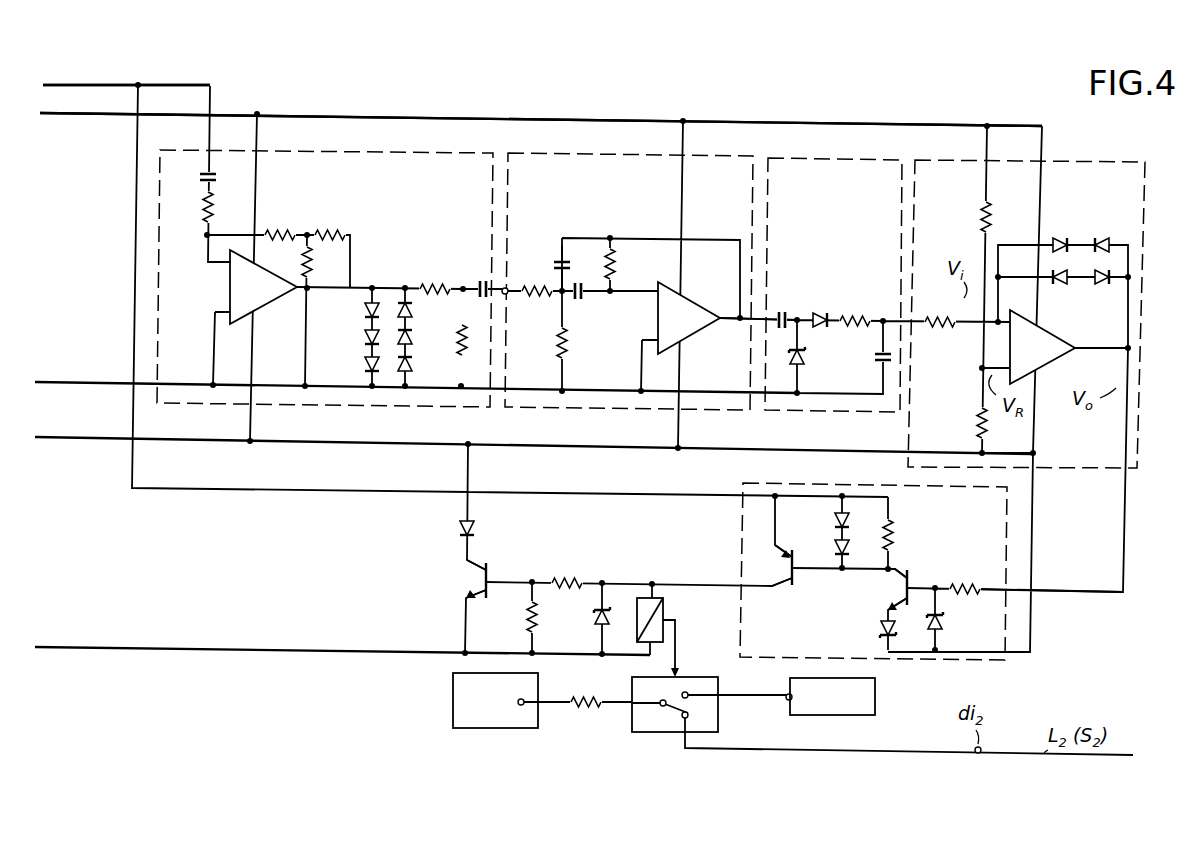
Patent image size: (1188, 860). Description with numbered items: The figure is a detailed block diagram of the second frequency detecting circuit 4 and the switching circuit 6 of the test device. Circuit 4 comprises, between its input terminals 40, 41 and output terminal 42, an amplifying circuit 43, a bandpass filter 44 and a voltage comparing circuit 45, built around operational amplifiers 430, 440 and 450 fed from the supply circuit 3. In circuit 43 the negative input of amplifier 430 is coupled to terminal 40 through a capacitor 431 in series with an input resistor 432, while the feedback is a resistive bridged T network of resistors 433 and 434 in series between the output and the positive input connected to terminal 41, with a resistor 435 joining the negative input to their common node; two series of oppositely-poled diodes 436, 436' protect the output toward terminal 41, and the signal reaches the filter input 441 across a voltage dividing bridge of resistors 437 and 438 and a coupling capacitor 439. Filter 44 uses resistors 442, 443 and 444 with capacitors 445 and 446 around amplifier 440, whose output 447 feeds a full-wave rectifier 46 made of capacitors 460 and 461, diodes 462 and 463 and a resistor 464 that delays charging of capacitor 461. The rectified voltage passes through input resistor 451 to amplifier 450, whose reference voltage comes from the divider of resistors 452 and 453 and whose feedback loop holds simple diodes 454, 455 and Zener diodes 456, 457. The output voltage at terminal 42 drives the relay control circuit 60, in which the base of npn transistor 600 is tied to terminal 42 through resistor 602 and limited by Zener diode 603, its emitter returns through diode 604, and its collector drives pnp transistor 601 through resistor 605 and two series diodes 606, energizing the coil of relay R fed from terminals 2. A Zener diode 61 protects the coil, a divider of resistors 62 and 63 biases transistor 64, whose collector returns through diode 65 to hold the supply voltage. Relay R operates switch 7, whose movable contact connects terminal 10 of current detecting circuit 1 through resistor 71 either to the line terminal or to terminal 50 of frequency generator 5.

The terminal of rectified supply 2 is at (68, 74).
The input terminal 40 is at (126, 73).
The supply circuit 3 is at (80, 116).
The second frequency detecting circuit 4 is at (684, 103).
The input terminal 41 is at (82, 384).
The output terminal 42 is at (1122, 516).
The amplifying circuit 43 is at (396, 151).
The bandpass filter 44 is at (576, 154).
The voltage comparing circuit 45 is at (1130, 162).
The full-wave rectifier 46 is at (856, 157).
The relay control circuit 60 is at (746, 485).
The operational amplifier 430 is at (205, 312).
The capacitor 431 is at (224, 167).
The input resistor 432 is at (228, 207).
The resistor 433 is at (332, 228).
The resistor 434 is at (287, 262).
The resistor 435 is at (282, 228).
The series of diodes 436 is at (348, 337).
The series of diodes 436' is at (430, 337).
The resistor 437 is at (440, 272).
The resistor 438 is at (460, 350).
The coupling capacitor 439 is at (488, 272).
The operational amplifier 440 is at (628, 340).
The filter input 441 is at (512, 290).
The resistor 442 is at (534, 298).
The resistor 443 is at (556, 348).
The resistor 444 is at (631, 264).
The capacitor 445 is at (574, 298).
The capacitor 446 is at (583, 268).
The output of amplifier 440 447 is at (748, 324).
The operational amplifier 450 is at (965, 340).
The input resistor 451 is at (942, 306).
The resistor 452 is at (980, 218).
The resistor 453 is at (978, 424).
The simple diode 454 is at (1061, 234).
The simple diode 455 is at (1060, 294).
The Zener diode 456 is at (1111, 234).
The Zener diode 457 is at (1100, 296).
The capacitor 460 is at (788, 305).
The output capacitor 461 is at (872, 372).
The diode 462 is at (817, 353).
The diode 463 is at (825, 306).
The resistor 464 is at (858, 306).
The npn bipolar transistor 600 is at (901, 592).
The pnp bipolar transistor 601 is at (788, 575).
The resistor 602 is at (970, 574).
The Zener diode 603 is at (944, 623).
The simple diode 604 is at (880, 632).
The resistor 605 is at (896, 536).
The series-connected simple diodes 606 is at (832, 540).
The Zener diode 61 is at (595, 620).
The resistor 62 is at (574, 568).
The resistor 63 is at (525, 619).
The npn bipolar transistor 64 is at (476, 580).
The single diode 65 is at (476, 528).
The relay R is at (668, 612).
The switching circuit 6 is at (413, 679).
The current detecting circuit 1 is at (468, 730).
The terminal of current detecting circuit 10 is at (518, 702).
The resistor 71 is at (584, 710).
The switch 7 is at (654, 732).
The terminal of frequency generator 50 is at (786, 700).
The frequency generator 5 is at (886, 678).